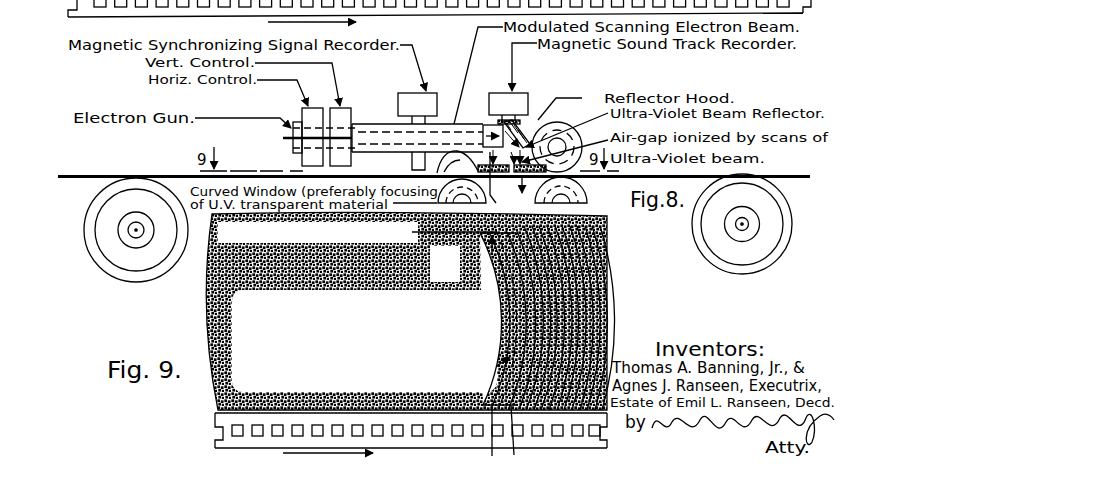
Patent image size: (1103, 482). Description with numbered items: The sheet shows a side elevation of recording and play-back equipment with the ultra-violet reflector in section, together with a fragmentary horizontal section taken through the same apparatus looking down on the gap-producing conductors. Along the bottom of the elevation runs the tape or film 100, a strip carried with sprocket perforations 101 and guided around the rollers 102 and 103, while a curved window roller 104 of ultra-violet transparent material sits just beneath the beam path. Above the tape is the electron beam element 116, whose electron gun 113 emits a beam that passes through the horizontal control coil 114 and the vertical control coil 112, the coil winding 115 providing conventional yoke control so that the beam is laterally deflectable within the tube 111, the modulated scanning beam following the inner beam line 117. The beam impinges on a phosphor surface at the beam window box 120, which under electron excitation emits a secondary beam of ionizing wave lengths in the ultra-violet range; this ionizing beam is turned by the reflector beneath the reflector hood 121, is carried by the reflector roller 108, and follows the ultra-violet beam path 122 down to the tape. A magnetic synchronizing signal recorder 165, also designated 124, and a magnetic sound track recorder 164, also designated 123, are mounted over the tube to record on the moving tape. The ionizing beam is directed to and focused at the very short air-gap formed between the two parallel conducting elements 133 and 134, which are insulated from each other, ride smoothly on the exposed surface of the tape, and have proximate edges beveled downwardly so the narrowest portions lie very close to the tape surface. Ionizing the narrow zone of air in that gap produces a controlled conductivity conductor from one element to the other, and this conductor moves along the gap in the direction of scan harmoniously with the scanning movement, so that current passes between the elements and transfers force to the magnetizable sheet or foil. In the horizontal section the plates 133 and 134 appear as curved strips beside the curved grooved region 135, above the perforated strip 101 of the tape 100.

In FIG. 8, the film strip / ionization block 100 is at (88, 173).
In FIG. 9, the film strip / ionization block 100 is at (206, 319).
In FIG. 9, the film sprocket perforations 101 is at (257, 439).
In FIG. 8, the film roller 102 is at (698, 241).
In FIG. 8, the film roller 103 is at (113, 268).
In FIG. 8, the curved window roller 104 is at (587, 197).
In FIG. 8, the ultra-violet beam reflector roller 108 is at (580, 136).
In FIG. 8, the electron beam tube 111 is at (391, 114).
In FIG. 8, the vertical control coil 112 is at (354, 109).
In FIG. 8, the electron gun 113 is at (291, 138).
In FIG. 8, the horizontal control coil 114 is at (300, 120).
In FIG. 8, the coil winding 115 is at (344, 105).
In FIG. 8, the electron beam element 116 is at (420, 148).
In FIG. 8, the tube inner beam line 117 is at (376, 140).
In FIG. 8, the beam window box 120 is at (484, 124).
In FIG. 8, the reflector hood 121 is at (557, 117).
In FIG. 8, the ultra-violet beam path 122 is at (505, 180).
In FIG. 8, the magnetic sound track recorder head (alt) 123 is at (525, 89).
In FIG. 8, the magnetic synchronizing recorder head (alt) 124 is at (404, 112).
In FIG. 8, the parallel conducting element 133 is at (465, 162).
In FIG. 9, the parallel conducting element 133 is at (492, 257).
In FIG. 8, the parallel conducting element 134 is at (541, 186).
In FIG. 9, the parallel conducting element 134 is at (514, 274).
In FIG. 9, the curved grooved region 135 is at (517, 297).
In FIG. 8, the magnetic sound track recorder 164 is at (519, 100).
In FIG. 8, the magnetic synchronizing signal recorder 165 is at (415, 100).